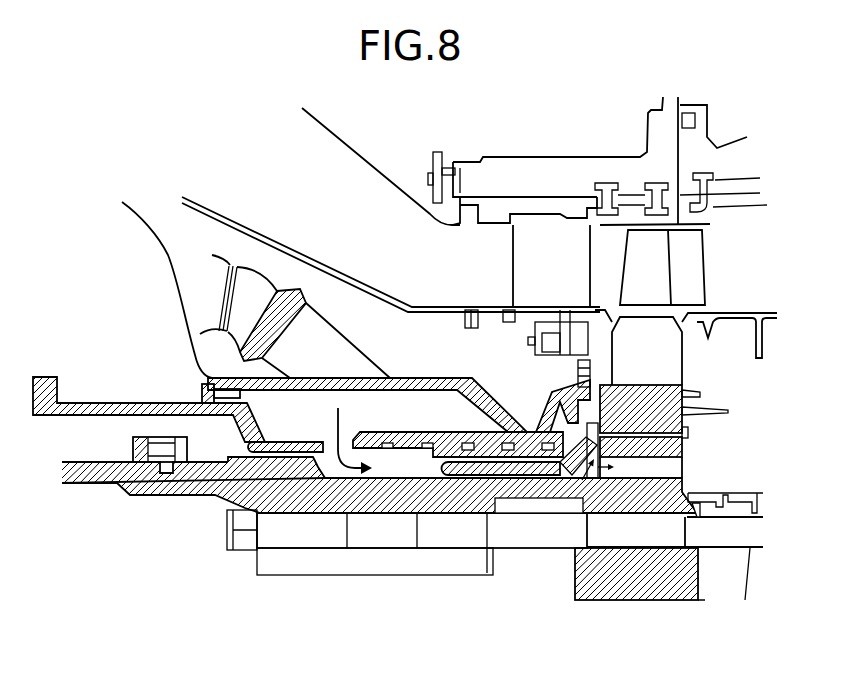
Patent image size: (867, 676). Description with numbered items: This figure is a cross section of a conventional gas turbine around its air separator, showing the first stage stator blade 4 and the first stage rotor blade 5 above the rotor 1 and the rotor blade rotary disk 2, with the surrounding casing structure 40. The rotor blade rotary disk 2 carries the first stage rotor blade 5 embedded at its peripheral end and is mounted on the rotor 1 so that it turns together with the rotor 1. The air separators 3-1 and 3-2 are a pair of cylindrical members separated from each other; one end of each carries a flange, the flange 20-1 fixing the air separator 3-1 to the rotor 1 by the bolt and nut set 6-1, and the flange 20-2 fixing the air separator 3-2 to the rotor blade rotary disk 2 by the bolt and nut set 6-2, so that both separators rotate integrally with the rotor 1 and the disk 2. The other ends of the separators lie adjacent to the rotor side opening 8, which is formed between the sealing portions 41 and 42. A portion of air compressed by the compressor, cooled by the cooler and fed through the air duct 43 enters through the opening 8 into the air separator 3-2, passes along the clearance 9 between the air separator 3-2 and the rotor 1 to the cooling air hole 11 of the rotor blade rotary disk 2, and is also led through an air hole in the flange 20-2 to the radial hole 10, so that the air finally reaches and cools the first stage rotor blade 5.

The casing 40 is at (200, 133).
The air duct 43 is at (203, 295).
The first stage stator blade 4 is at (528, 272).
The first stage rotor blade 5 is at (673, 270).
The bolt and nut set 6-1 is at (137, 448).
The radial hole 10 is at (580, 382).
The flange 20-2 is at (587, 427).
The sealing portion 42 is at (278, 443).
The sealing portion 41 is at (392, 432).
The rotor blade rotary disk 2 is at (667, 385).
The bolt and nut set 6-2 is at (682, 453).
The cooling air hole 11 is at (682, 468).
The flange 20-1 is at (150, 497).
The air separator 3-1 is at (295, 468).
The rotor side opening 8 is at (393, 477).
The air separator 3-2 is at (457, 473).
The clearance 9 is at (490, 480).
The rotor 1 is at (530, 493).